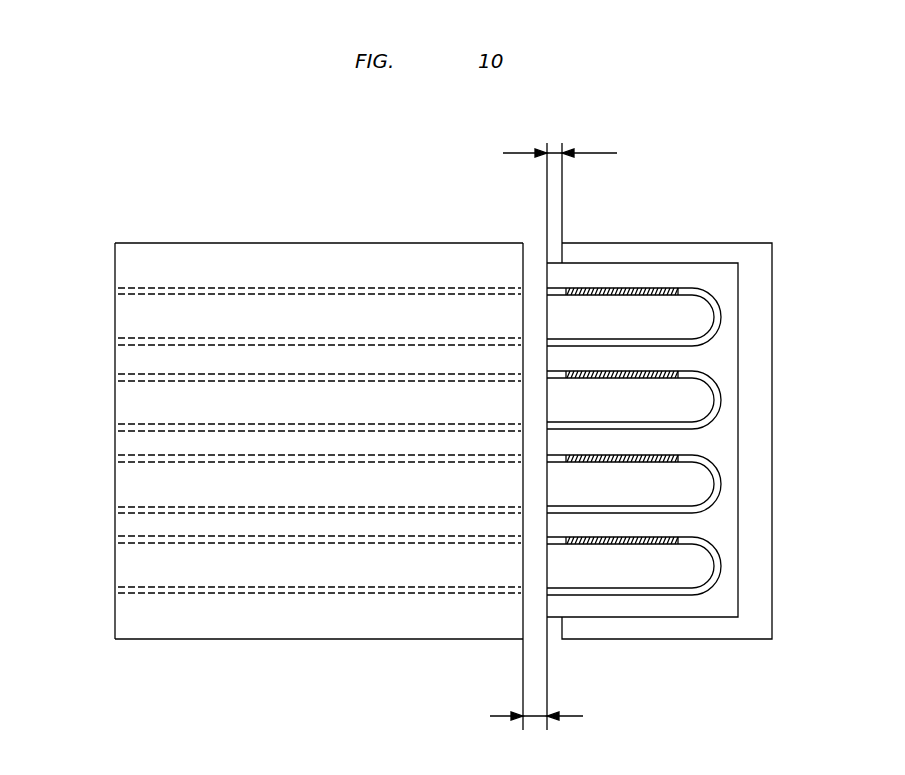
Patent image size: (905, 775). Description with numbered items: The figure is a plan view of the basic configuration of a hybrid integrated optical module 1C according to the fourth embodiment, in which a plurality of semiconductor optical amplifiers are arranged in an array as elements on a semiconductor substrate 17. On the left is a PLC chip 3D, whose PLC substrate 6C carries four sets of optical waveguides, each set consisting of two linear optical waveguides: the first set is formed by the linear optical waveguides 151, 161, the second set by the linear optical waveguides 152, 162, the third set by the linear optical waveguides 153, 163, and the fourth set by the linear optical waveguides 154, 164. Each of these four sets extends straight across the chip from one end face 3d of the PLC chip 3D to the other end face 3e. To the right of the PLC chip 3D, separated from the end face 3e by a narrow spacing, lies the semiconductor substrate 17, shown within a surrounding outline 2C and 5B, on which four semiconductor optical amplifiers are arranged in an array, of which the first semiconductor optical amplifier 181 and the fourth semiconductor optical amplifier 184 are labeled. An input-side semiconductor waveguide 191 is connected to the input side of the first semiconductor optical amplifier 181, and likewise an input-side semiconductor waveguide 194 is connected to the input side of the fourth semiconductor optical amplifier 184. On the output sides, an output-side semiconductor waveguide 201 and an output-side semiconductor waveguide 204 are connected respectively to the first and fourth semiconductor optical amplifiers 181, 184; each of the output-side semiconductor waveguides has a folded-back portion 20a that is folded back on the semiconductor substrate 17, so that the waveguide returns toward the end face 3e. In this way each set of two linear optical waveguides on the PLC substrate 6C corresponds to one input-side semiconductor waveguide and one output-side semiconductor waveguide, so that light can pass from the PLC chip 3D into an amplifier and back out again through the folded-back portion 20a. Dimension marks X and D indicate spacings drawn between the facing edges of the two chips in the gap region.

The hybrid integrated optical module 1C is at (368, 232).
The PLC chip 3D is at (360, 641).
The end face of PLC chip 3d is at (117, 613).
The other end face of PLC chip 3e is at (533, 255).
The PLC substrate 6C is at (428, 642).
The linear optical waveguide 151 is at (290, 290).
The linear optical waveguide 152 is at (120, 373).
The linear optical waveguide 153 is at (120, 457).
The linear optical waveguide 154 is at (258, 545).
The linear optical waveguide 161 is at (205, 340).
The linear optical waveguide 162 is at (120, 426).
The linear optical waveguide 163 is at (120, 508).
The linear optical waveguide 164 is at (178, 594).
The connector 2C is at (633, 263).
The housing 5B is at (672, 633).
The semiconductor substrate 17 is at (727, 432).
The semiconductor optical amplifier 181 is at (665, 288).
The semiconductor optical amplifier 184 is at (655, 537).
The input-side semiconductor waveguide 191 is at (557, 288).
The input-side semiconductor waveguide 194 is at (557, 544).
The output-side semiconductor waveguide 201 is at (711, 339).
The output-side semiconductor waveguide 204 is at (675, 590).
The folded-back portion 20a is at (722, 310).
The gap dimension X is at (560, 143).
The gap dimension D is at (536, 733).